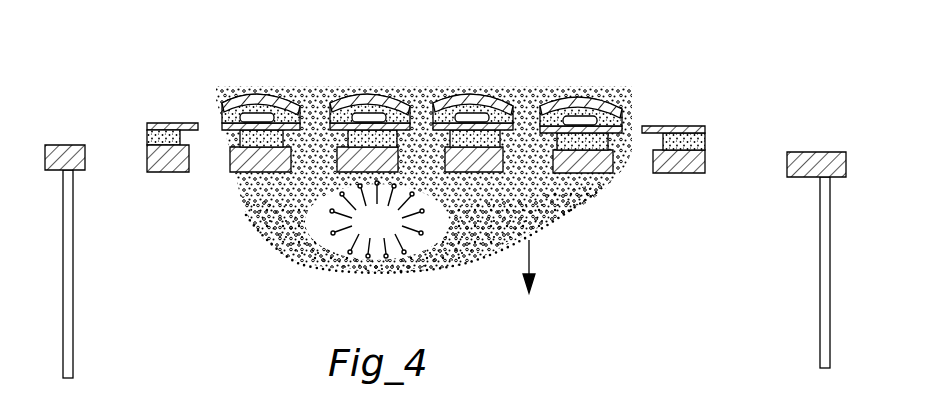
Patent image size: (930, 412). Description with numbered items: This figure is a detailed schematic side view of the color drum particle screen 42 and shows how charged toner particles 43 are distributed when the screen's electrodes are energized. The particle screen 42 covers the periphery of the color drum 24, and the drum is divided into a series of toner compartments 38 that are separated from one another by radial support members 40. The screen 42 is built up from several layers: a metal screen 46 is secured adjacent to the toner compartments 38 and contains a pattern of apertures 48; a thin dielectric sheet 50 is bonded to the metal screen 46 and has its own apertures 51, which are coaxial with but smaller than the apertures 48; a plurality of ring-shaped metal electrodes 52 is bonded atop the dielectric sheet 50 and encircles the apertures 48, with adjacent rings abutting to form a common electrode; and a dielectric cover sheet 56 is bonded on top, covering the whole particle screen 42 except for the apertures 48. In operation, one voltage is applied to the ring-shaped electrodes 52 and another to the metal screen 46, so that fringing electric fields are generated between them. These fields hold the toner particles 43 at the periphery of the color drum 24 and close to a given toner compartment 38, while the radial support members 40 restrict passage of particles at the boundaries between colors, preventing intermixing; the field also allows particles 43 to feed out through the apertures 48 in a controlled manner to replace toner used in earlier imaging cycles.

The color drum 24 is at (600, 270).
The toner compartment 38 is at (835, 238).
The radial support member 40 is at (63, 276).
The color drum particle screen 42 is at (138, 128).
The toner particles 43 is at (550, 97).
The metal screen 46 is at (147, 167).
The apertures 48 is at (222, 161).
The dielectric sheet 50 is at (218, 128).
The apertures 51 is at (216, 124).
The ring-shaped metal electrodes 52 is at (327, 101).
The dielectric cover sheet 56 is at (222, 105).